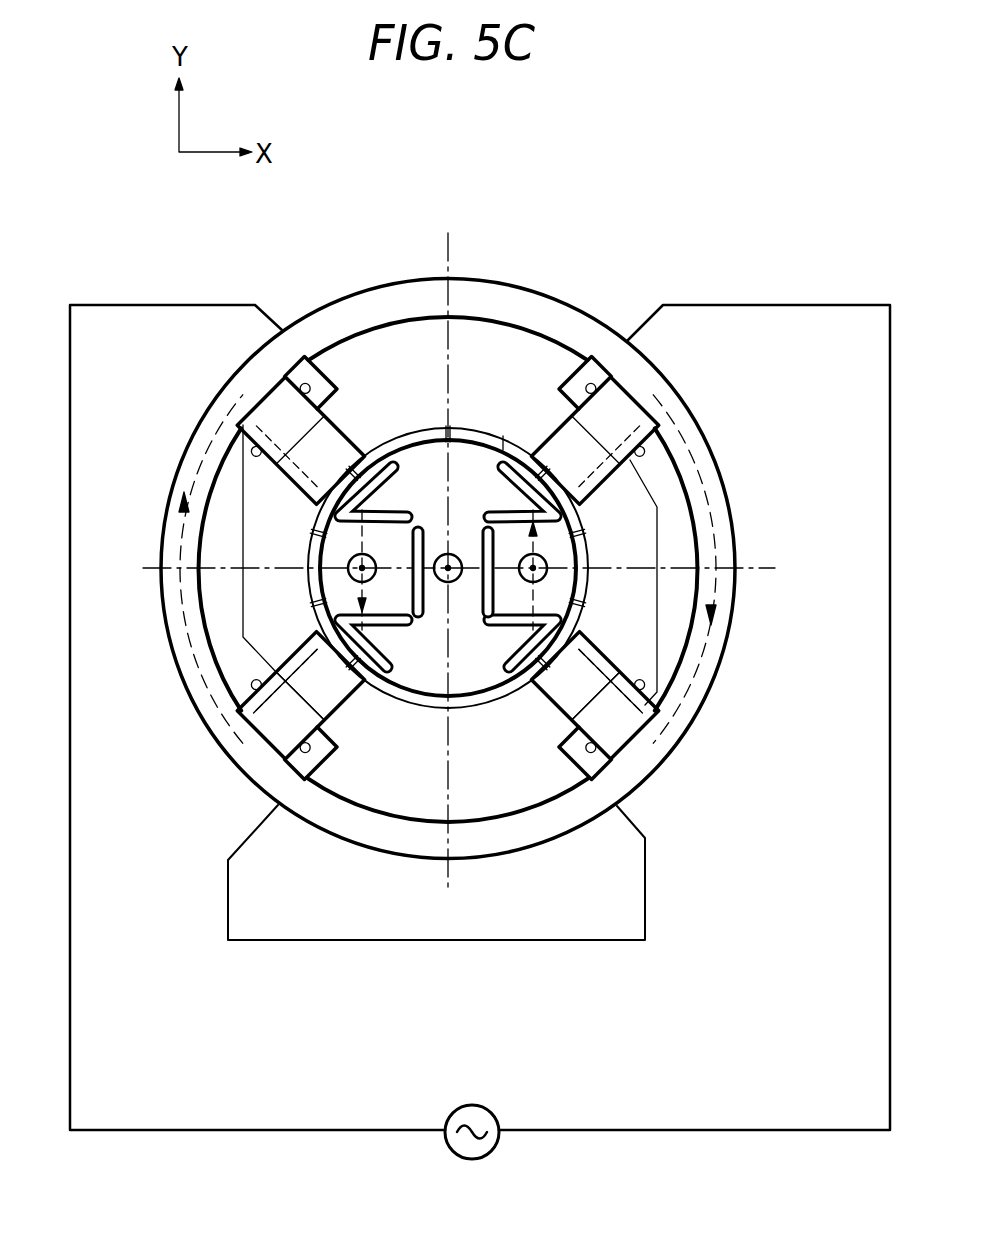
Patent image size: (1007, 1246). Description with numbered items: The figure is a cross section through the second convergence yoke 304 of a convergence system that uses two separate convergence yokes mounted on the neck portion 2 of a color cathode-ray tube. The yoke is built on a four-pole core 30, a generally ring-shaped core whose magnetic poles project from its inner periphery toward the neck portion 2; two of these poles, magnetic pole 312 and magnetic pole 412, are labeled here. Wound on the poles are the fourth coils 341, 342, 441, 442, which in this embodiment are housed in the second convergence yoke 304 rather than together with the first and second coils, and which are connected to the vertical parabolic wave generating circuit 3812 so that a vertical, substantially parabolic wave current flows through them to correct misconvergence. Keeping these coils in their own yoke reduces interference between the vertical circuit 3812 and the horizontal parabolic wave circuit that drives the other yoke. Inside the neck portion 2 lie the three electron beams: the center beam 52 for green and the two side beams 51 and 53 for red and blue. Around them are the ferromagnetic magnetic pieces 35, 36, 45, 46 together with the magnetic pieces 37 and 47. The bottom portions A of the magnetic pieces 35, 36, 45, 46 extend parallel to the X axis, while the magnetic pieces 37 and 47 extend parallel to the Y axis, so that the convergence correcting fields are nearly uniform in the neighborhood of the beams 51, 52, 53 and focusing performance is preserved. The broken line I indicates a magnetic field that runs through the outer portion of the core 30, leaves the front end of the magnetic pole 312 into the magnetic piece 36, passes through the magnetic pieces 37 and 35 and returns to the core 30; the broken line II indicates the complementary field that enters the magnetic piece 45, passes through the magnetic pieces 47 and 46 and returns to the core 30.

The second convergence yoke 304 is at (575, 268).
The four-pole core 30 is at (400, 273).
The fourth coil 341 is at (603, 412).
The fourth coil 342 is at (668, 752).
The fourth coil 441 is at (278, 386).
The fourth coil 442 is at (277, 713).
The magnetic pole 312 is at (552, 713).
The magnetic pole 412 is at (322, 733).
The neck portion 2 is at (455, 708).
The magnetic piece 45 is at (392, 466).
The magnetic piece 35 is at (512, 462).
The magnetic piece 46 is at (386, 666).
The magnetic piece 36 is at (508, 665).
The magnetic piece 47 is at (417, 532).
The magnetic piece 37 is at (486, 532).
The center electron beam 52 is at (445, 562).
The side electron beam 53 is at (358, 566).
The side electron beam 51 is at (540, 568).
The bottom portion A is at (503, 468).
The magnetic field I is at (717, 473).
The magnetic field II is at (185, 462).
The vertical parabolic wave generating circuit 3812 is at (498, 1120).